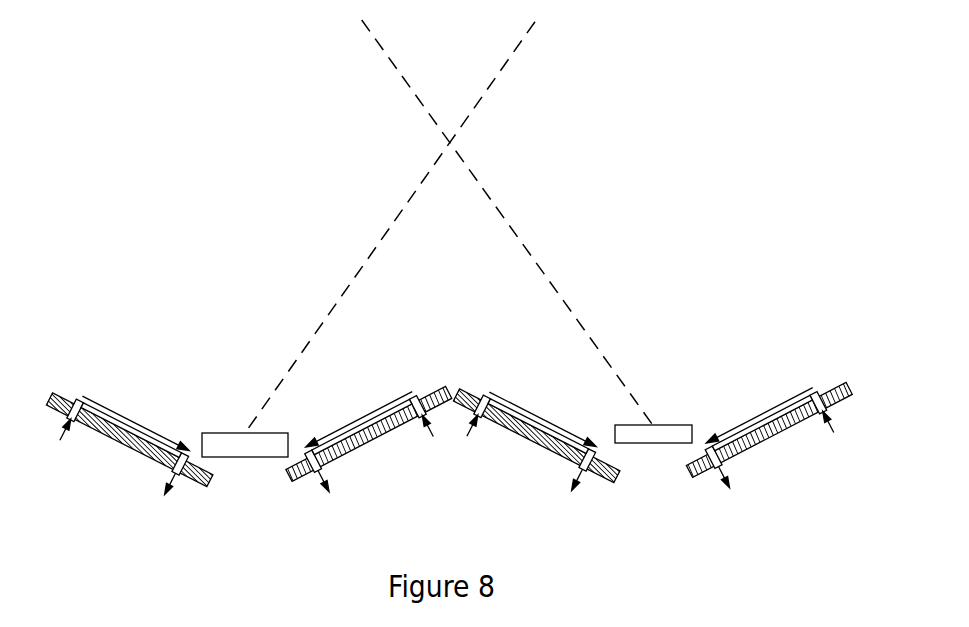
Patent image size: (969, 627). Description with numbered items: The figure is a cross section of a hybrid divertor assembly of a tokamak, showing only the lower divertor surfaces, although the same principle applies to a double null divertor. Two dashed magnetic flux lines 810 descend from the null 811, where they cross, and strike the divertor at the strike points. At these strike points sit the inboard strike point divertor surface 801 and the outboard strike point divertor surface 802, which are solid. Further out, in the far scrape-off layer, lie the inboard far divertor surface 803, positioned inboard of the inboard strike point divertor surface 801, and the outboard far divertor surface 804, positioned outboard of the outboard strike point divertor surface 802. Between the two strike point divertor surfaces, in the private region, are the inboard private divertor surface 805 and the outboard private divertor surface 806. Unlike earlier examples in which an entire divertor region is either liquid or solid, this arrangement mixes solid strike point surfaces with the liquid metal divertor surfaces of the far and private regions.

The inboard strike point divertor surface 801 is at (243, 457).
The outboard strike point divertor surface 802 is at (657, 443).
The inboard far divertor surface 803 is at (123, 446).
The outboard far divertor surface 804 is at (772, 437).
The inboard private divertor surface 805 is at (375, 442).
The outboard private divertor surface 806 is at (528, 442).
The magnetic flux lines 810 is at (481, 185).
The null 811 is at (450, 142).